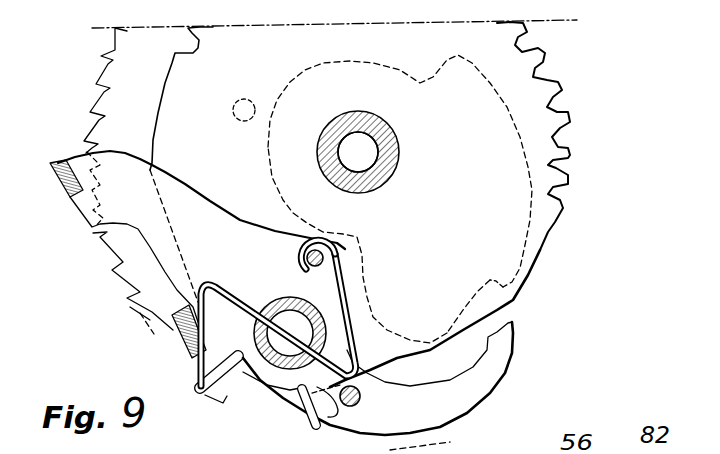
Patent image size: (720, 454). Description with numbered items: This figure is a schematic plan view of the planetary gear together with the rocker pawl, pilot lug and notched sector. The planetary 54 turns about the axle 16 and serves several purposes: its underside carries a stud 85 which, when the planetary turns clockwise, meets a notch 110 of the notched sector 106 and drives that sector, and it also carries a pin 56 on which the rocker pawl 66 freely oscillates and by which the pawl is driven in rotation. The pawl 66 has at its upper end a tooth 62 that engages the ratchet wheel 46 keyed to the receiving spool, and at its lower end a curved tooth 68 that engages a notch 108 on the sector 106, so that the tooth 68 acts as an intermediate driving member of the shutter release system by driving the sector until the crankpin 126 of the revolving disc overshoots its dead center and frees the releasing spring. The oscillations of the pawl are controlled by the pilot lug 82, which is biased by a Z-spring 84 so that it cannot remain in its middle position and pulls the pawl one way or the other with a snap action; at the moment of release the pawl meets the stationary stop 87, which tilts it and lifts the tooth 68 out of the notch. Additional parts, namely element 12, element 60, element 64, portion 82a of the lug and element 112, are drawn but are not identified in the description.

The shaft 12 is at (396, 147).
The axle 16 is at (358, 162).
The ratchet wheel 46 is at (105, 65).
The planetary 54 is at (536, 88).
The pin 56 is at (300, 298).
The brake arm 60 is at (204, 213).
The tooth 62 is at (62, 184).
The arcuate carrier member 64 is at (492, 380).
The rocker pawl 66 is at (196, 340).
The curved tooth 68 is at (518, 326).
The pilot lug 82 is at (227, 374).
The lug of latch bar 82a is at (313, 421).
The Z-spring 84 is at (240, 298).
The stud 85 is at (328, 257).
The stationary stop 87 is at (360, 399).
The notched sector 106 is at (531, 268).
The notch 108 is at (512, 294).
The notch 110 is at (449, 58).
The step of cam 112 is at (462, 320).
The crankpin 126 is at (247, 99).